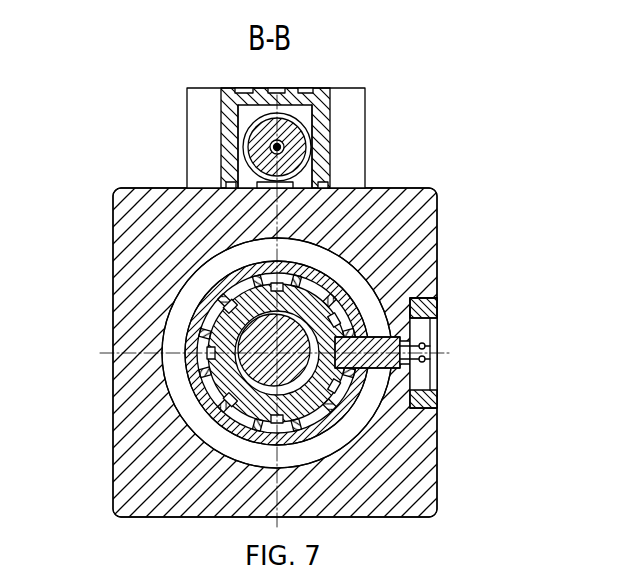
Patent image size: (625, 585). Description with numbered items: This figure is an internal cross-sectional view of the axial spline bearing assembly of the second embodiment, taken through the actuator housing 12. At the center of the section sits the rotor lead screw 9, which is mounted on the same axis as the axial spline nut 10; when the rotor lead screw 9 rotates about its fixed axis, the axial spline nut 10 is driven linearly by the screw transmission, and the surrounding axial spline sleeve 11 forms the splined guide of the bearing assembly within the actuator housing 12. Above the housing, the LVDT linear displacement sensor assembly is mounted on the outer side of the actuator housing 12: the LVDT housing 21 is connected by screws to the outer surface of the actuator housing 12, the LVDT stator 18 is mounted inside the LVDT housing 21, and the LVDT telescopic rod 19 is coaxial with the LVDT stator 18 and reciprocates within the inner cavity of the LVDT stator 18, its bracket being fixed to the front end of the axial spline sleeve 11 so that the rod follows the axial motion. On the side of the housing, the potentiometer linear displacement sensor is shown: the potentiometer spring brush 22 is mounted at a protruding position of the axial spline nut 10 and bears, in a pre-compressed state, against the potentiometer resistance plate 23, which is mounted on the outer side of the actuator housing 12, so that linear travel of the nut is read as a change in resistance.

The rotor lead screw 9 is at (355, 187).
The axial spline nut 10 is at (113, 468).
The axial spline sleeve 11 is at (193, 255).
The actuator housing 12 is at (377, 402).
The LVDT stator 18 is at (272, 172).
The LVDT telescopic rod 19 is at (318, 165).
The LVDT housing 21 is at (328, 170).
The potentiometer spring brush 22 is at (437, 318).
The potentiometer resistance plate 23 is at (427, 398).